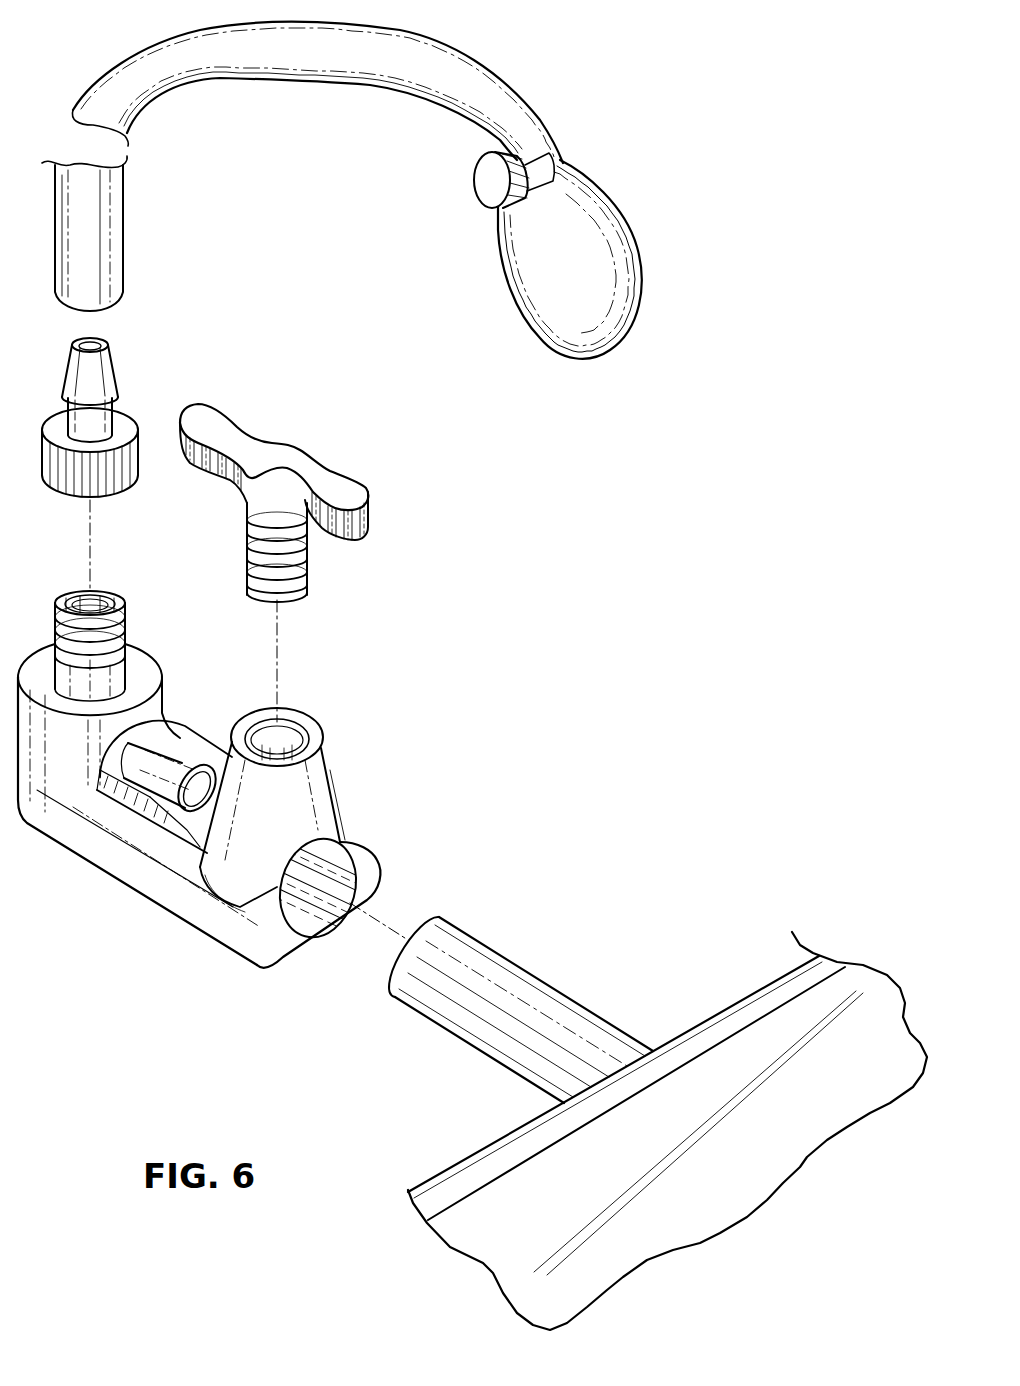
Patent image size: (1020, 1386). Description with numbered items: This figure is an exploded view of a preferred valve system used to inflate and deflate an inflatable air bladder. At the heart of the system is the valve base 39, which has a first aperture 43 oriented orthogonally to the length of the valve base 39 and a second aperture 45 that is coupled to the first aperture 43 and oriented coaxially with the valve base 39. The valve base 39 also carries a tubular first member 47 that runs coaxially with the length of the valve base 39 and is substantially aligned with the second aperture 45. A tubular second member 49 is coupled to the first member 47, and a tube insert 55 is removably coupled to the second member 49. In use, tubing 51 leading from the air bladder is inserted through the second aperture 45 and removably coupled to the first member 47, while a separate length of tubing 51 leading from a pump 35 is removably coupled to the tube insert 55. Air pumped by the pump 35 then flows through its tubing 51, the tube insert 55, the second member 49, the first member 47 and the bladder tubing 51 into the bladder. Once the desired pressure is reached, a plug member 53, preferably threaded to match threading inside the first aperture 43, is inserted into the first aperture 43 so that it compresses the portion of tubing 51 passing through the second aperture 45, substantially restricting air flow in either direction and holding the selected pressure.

The pump 35 is at (517, 273).
The tubing 51 is at (108, 256).
The tube insert 55 is at (105, 370).
The plug member 53 is at (277, 453).
The tubular second member 49 is at (82, 602).
The valve base 39 is at (190, 735).
The tubular first member 47 is at (193, 758).
The first aperture 43 is at (290, 727).
The second aperture 45 is at (345, 880).